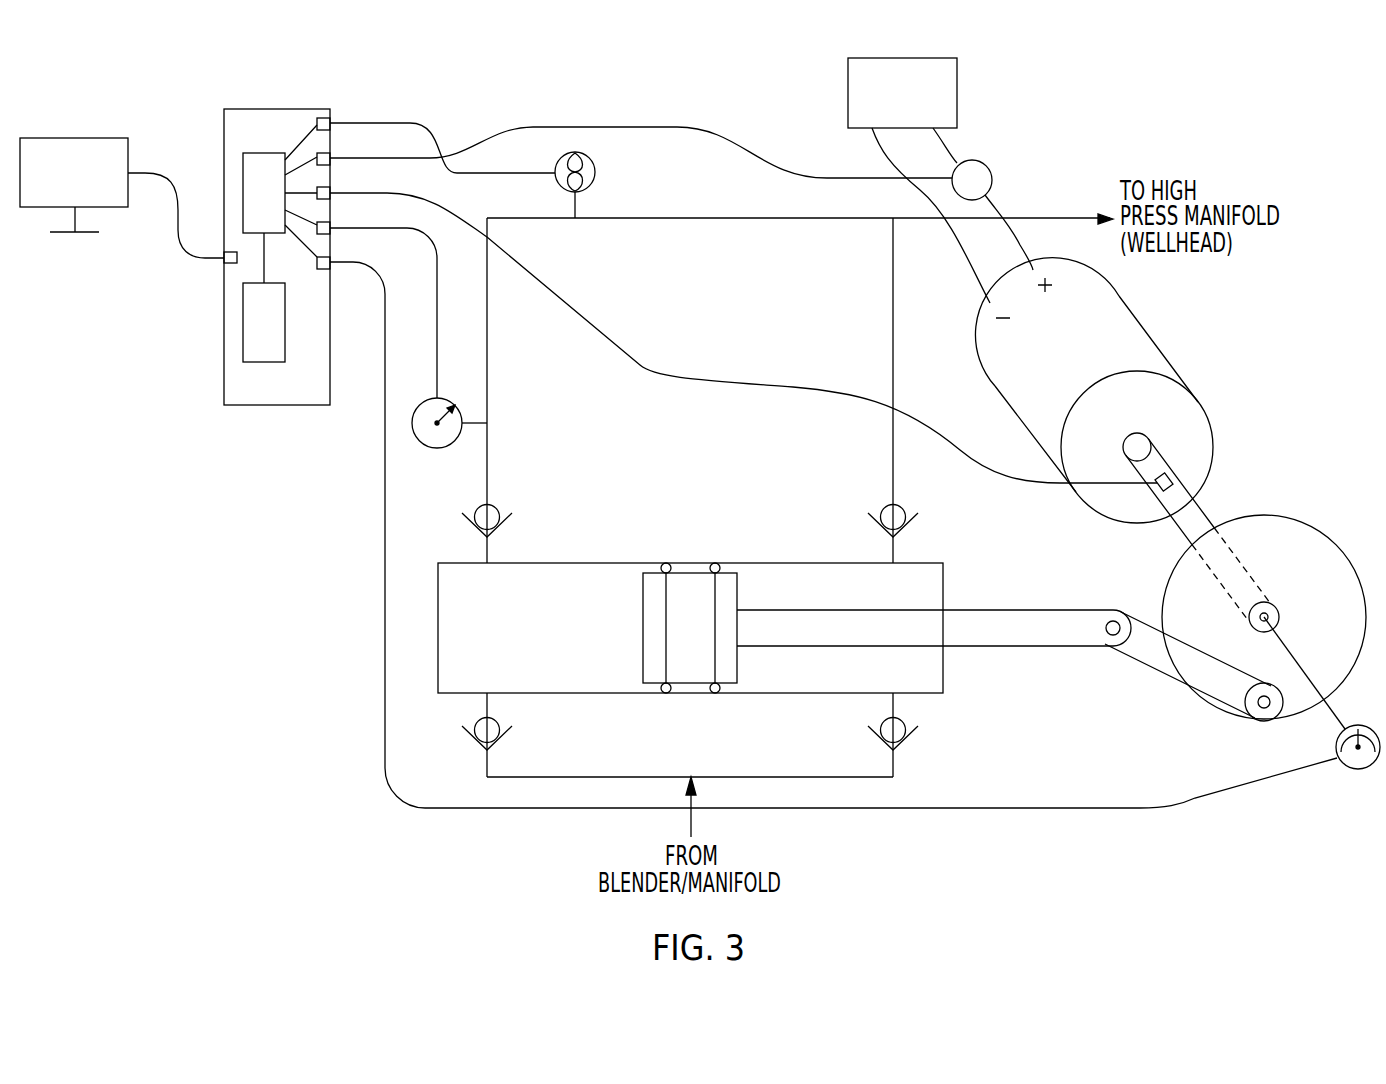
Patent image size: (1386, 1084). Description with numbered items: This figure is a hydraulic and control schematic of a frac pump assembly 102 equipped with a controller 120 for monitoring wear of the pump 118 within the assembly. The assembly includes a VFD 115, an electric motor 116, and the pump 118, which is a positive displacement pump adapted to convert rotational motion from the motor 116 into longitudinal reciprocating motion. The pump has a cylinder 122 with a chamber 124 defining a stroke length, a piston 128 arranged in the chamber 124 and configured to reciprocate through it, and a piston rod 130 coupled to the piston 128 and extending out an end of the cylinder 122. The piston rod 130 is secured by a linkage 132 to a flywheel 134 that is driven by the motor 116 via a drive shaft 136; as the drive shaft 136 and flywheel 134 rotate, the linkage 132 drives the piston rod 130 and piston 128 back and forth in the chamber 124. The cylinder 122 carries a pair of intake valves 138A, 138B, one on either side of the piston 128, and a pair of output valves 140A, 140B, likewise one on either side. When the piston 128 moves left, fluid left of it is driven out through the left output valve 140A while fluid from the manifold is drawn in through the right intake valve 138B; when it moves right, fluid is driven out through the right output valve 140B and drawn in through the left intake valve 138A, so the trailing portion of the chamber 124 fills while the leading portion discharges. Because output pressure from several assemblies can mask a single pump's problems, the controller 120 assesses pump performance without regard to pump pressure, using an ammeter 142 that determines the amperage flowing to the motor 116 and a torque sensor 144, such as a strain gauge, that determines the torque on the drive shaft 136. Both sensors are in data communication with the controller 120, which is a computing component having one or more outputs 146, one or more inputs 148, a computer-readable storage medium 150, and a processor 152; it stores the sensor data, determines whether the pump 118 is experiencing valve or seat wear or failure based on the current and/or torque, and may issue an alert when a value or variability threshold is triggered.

The frac pump assembly 102 is at (1183, 78).
The VFD 115 is at (958, 92).
The electric motor 116 is at (1163, 350).
The pump 118 is at (953, 743).
The controller 120 is at (275, 108).
The cylinder 122 is at (558, 563).
The chamber 124 is at (531, 656).
The piston 128 is at (682, 662).
The piston rod 130 is at (1000, 610).
The linkage 132 is at (1150, 668).
The flywheel 134 is at (1290, 517).
The drive shaft 136 is at (1205, 510).
The intake valve 138A is at (470, 742).
The intake valve 138B is at (878, 742).
The output valve 140A is at (470, 527).
The output valve 140B is at (878, 528).
The ammeter 142 is at (988, 167).
The torque sensor 144 is at (1173, 476).
The outputs 146 is at (228, 265).
The inputs 148 is at (330, 257).
The computer-readable storage medium 150 is at (243, 320).
The processor 152 is at (243, 193).